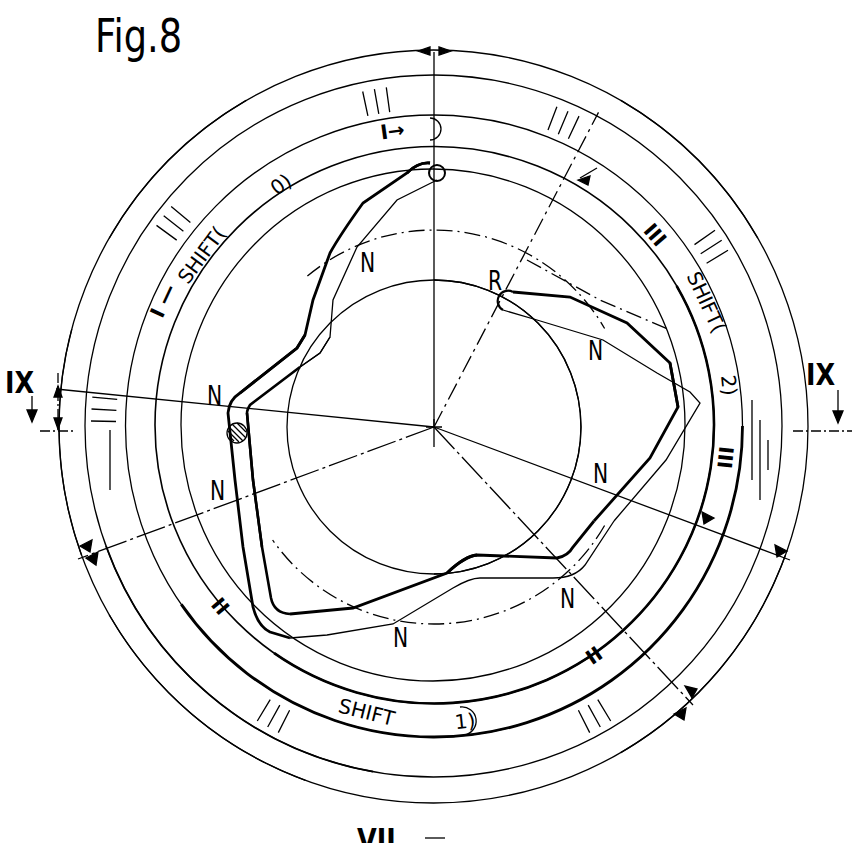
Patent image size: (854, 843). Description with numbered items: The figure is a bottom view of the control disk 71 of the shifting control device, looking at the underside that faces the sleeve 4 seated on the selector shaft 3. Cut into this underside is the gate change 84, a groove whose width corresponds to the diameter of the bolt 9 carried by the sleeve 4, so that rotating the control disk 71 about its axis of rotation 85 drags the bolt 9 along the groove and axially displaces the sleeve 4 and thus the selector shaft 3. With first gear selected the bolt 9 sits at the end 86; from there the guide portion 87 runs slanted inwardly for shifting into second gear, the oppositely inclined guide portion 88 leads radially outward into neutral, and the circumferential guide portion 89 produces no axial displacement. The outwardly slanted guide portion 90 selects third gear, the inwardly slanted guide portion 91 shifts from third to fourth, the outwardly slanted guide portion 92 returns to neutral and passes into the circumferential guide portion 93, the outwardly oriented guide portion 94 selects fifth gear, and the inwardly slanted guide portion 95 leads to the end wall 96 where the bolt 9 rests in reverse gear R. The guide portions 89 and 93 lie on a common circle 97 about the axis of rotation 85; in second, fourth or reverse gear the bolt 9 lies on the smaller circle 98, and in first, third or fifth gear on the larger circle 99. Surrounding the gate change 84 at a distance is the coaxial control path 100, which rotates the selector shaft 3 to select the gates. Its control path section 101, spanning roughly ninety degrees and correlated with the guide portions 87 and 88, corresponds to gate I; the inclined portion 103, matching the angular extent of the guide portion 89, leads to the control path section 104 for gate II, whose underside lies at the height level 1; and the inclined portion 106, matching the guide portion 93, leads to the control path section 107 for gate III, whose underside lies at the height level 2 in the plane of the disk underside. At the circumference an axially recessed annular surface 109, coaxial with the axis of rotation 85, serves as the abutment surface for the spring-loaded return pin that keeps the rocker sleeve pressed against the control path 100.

The height level 1 is at (432, 183).
The height level 2 is at (321, 353).
The selector shaft 3 is at (470, 509).
The sleeve 4 is at (466, 549).
The bolt 9 is at (228, 440).
The control disk 71 is at (531, 106).
The gate change 84 is at (363, 203).
The axis of rotation 85 is at (437, 427).
The end 86 is at (439, 181).
The guide portion 87 is at (355, 223).
The guide portion 88 is at (278, 378).
The guide portion 89 is at (243, 466).
The guide portion 90 is at (280, 540).
The guide portion 91 is at (357, 617).
The guide portion 92 is at (528, 563).
The guide portion 93 is at (603, 522).
The guide portion 94 is at (585, 458).
The guide portion 95 is at (638, 353).
The end wall 96 is at (500, 310).
The common circle 97 is at (570, 253).
The circle 98 is at (415, 283).
The circle 99 is at (630, 260).
The control path 100 is at (560, 722).
The control path section 101 is at (177, 169).
The inclined portion 103 is at (53, 442).
The control path section 104 is at (207, 702).
The inclined portion 106 is at (708, 653).
The control path section 107 is at (689, 169).
The annular surface 109 is at (322, 741).